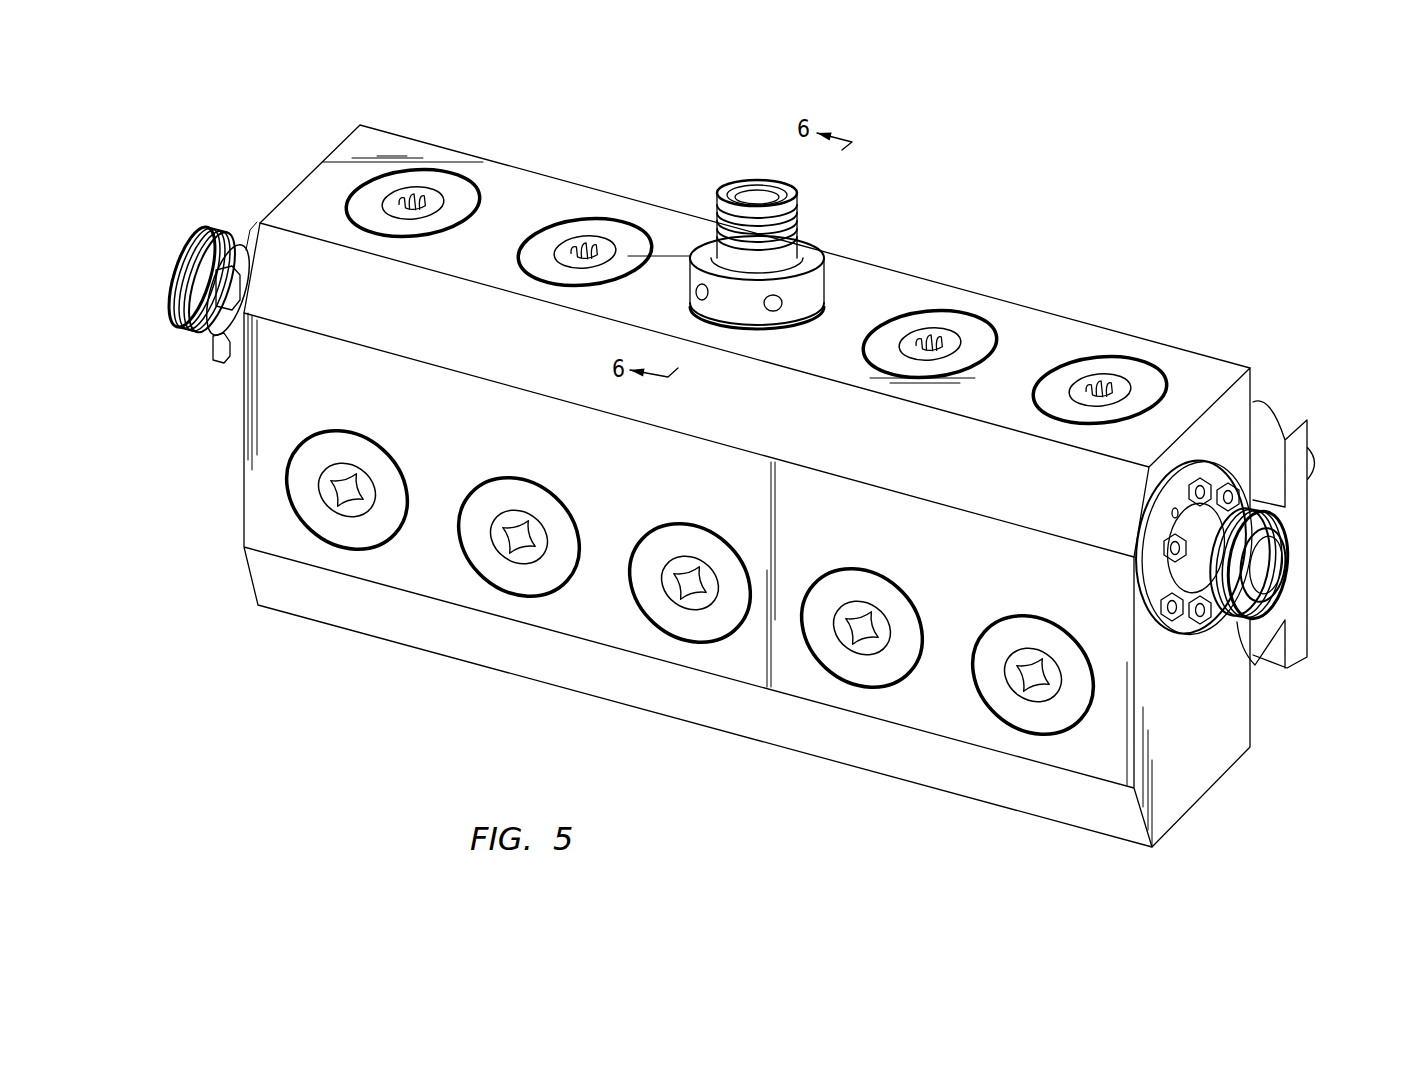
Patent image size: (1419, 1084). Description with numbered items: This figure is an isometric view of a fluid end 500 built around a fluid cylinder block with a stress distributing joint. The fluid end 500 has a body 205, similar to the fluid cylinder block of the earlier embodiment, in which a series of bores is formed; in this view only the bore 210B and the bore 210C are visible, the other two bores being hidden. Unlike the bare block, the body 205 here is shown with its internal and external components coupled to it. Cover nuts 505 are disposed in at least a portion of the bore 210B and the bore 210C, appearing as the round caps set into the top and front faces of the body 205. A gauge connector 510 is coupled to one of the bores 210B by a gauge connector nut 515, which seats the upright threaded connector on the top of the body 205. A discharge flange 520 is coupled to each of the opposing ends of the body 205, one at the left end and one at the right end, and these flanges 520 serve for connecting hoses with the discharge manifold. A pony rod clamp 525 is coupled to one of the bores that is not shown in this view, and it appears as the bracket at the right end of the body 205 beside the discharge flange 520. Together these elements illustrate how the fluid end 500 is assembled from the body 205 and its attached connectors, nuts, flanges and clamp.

The fluid end 500 is at (1180, 256).
The body 205 is at (1213, 373).
The bore 210B is at (1148, 370).
The bore 210C is at (492, 583).
The cover nuts 505 is at (960, 328).
The gauge connector 510 is at (795, 203).
The gauge connector nut 515 is at (806, 263).
The discharge flange 520 is at (190, 333).
The pony rod clamp 525 is at (1312, 470).